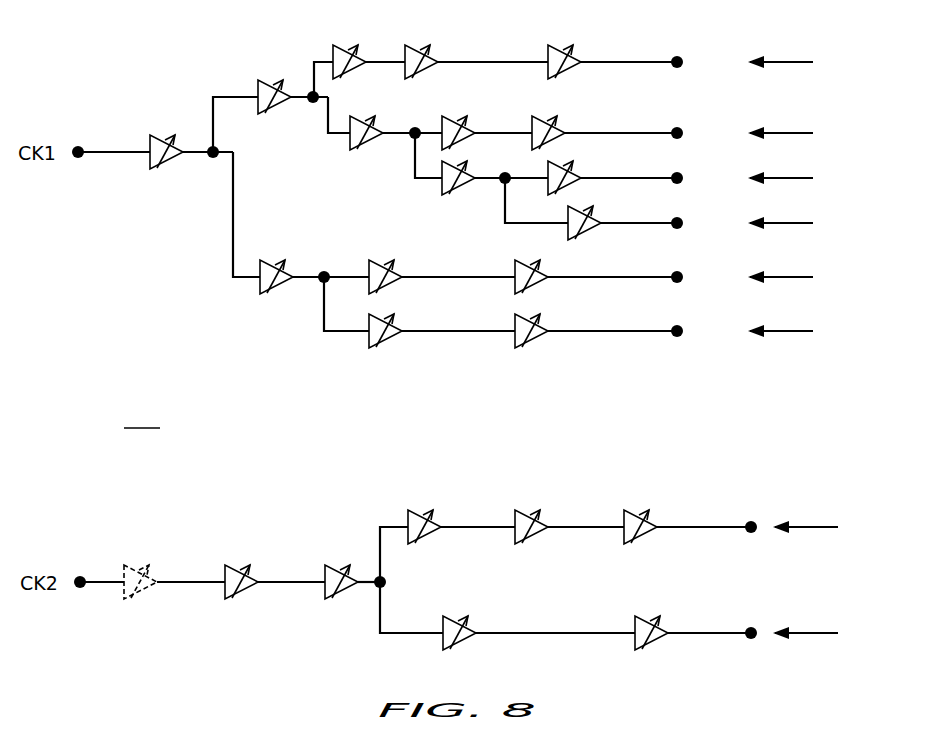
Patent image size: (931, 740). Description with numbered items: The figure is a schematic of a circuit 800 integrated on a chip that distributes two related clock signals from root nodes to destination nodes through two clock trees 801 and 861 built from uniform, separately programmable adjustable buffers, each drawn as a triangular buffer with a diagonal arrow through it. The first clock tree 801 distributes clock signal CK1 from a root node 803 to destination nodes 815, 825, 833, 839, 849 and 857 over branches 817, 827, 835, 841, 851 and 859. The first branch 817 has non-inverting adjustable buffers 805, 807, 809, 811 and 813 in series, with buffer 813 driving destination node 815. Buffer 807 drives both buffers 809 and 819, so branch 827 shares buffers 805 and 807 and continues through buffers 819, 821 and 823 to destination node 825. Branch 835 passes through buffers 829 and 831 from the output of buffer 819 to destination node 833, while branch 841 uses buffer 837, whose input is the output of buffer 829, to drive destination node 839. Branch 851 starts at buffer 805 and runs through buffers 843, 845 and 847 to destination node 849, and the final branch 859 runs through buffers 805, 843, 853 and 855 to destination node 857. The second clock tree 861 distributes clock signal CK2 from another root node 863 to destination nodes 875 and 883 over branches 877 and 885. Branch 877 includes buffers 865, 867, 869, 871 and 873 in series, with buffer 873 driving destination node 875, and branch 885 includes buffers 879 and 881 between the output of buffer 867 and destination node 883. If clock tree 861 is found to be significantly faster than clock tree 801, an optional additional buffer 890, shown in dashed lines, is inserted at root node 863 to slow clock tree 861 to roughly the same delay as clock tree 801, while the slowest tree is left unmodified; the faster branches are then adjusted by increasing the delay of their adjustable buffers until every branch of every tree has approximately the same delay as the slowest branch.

The circuit 800 is at (142, 418).
The first clock tree 801 is at (718, 375).
The root node 803 is at (80, 140).
The adjustable buffer 805 is at (165, 139).
The adjustable buffer 807 is at (272, 84).
The adjustable buffer 809 is at (347, 49).
The adjustable buffer 811 is at (418, 49).
The adjustable buffer 813 is at (568, 49).
The destination node 815 is at (676, 50).
The first branch 817 is at (800, 63).
The adjustable buffer 819 is at (373, 120).
The adjustable buffer 821 is at (456, 120).
The adjustable buffer 823 is at (556, 120).
The destination node 825 is at (676, 123).
The branch 827 is at (800, 135).
The adjustable buffer 829 is at (466, 188).
The adjustable buffer 831 is at (582, 170).
The destination node 833 is at (676, 169).
The branch 835 is at (800, 180).
The adjustable buffer 837 is at (600, 229).
The destination node 839 is at (676, 213).
The branch 841 is at (800, 225).
The adjustable buffer 843 is at (276, 263).
The adjustable buffer 845 is at (387, 264).
The adjustable buffer 847 is at (529, 265).
The destination node 849 is at (676, 266).
The branch 851 is at (800, 279).
The adjustable buffer 853 is at (402, 338).
The adjustable buffer 855 is at (550, 338).
The destination node 857 is at (676, 319).
The branch 859 is at (800, 333).
The second clock tree 861 is at (718, 456).
The root node 863 is at (84, 571).
The adjustable buffer 865 is at (243, 568).
The adjustable buffer 867 is at (344, 566).
The adjustable buffer 869 is at (424, 511).
The adjustable buffer 871 is at (534, 515).
The adjustable buffer 873 is at (642, 514).
The destination node 875 is at (750, 515).
The first branch 877 is at (825, 529).
The adjustable buffer 879 is at (463, 622).
The adjustable buffer 881 is at (649, 622).
The destination node 883 is at (750, 621).
The last branch 885 is at (825, 635).
The additional adjustable buffer 890 is at (142, 568).